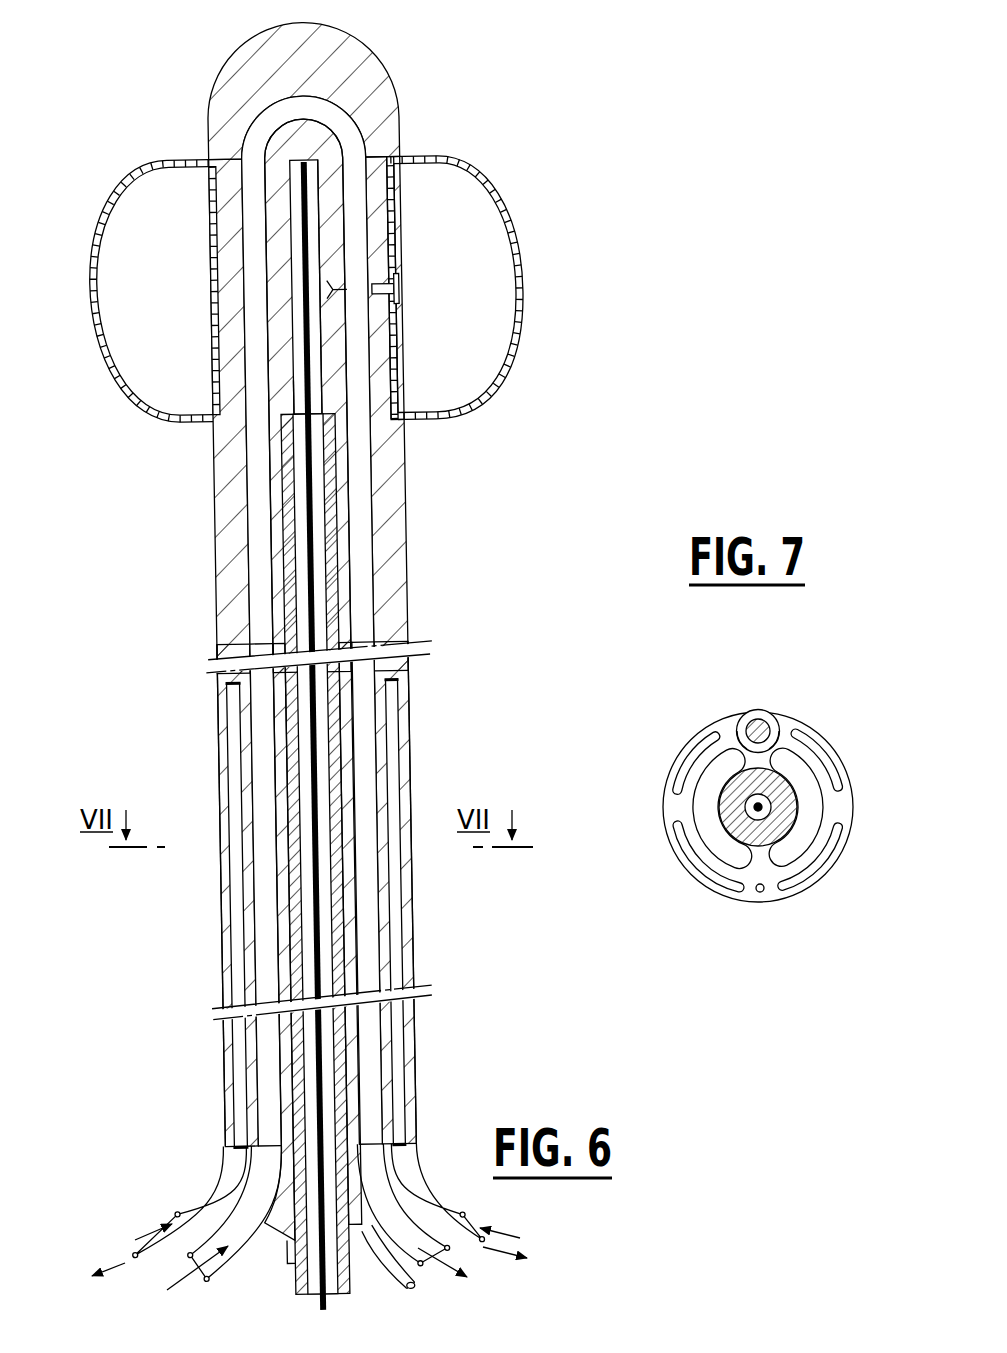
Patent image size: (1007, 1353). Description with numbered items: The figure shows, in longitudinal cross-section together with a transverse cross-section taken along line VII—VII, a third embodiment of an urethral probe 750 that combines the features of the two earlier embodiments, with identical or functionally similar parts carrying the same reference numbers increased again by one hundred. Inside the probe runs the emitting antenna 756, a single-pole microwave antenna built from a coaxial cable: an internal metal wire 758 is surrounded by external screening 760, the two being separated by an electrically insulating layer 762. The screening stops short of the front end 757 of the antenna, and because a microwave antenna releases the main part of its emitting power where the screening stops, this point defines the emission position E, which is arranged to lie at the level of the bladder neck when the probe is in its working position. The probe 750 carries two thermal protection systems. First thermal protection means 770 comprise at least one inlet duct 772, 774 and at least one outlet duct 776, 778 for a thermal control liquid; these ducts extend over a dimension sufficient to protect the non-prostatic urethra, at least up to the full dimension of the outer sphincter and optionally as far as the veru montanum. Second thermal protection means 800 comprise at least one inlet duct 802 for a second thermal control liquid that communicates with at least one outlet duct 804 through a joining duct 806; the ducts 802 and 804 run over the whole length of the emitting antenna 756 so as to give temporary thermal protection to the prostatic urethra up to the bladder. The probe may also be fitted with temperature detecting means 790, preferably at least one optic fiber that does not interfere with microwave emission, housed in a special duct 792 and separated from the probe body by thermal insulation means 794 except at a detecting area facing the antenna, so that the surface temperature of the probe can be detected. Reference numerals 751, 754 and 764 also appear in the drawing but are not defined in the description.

In FIG. 6, the urethral probe 750 is at (418, 947).
In FIG. 7, the urethral probe 750 is at (719, 910).
In FIG. 6, the distal tip 751 is at (290, 55).
In FIG. 6, the balloon lobes 754 is at (518, 248).
In FIG. 6, the emitting antenna 756 is at (320, 461).
In FIG. 7, the emitting antenna 756 is at (742, 800).
In FIG. 6, the front end of the antenna 757 is at (344, 139).
In FIG. 6, the internal metal wire 758 is at (300, 189).
In FIG. 6, the external screening 760 is at (342, 631).
In FIG. 6, the electrically insulating layer 762 is at (314, 392).
In FIG. 6, the wire 764 is at (370, 270).
In FIG. 7, the wire 764 is at (760, 894).
In FIG. 6, the first thermal protection means 770 is at (236, 754).
In FIG. 6, the inlet duct 772 is at (240, 929).
In FIG. 7, the inlet duct 772 is at (689, 853).
In FIG. 6, the inlet duct 774 is at (398, 1054).
In FIG. 7, the inlet duct 774 is at (822, 860).
In FIG. 7, the outlet duct 776 is at (825, 758).
In FIG. 7, the outlet duct 778 is at (696, 753).
In FIG. 7, the temperature detecting means 790 is at (757, 712).
In FIG. 7, the special duct 792 is at (733, 735).
In FIG. 7, the thermal insulation means 794 is at (769, 722).
In FIG. 6, the second thermal protection means 800 is at (268, 619).
In FIG. 6, the inlet duct 802 is at (264, 537).
In FIG. 7, the inlet duct 802 is at (704, 816).
In FIG. 6, the outlet duct 804 is at (372, 550).
In FIG. 7, the outlet duct 804 is at (809, 807).
In FIG. 6, the joining duct 806 is at (319, 113).
In FIG. 6, the emission position E is at (290, 401).